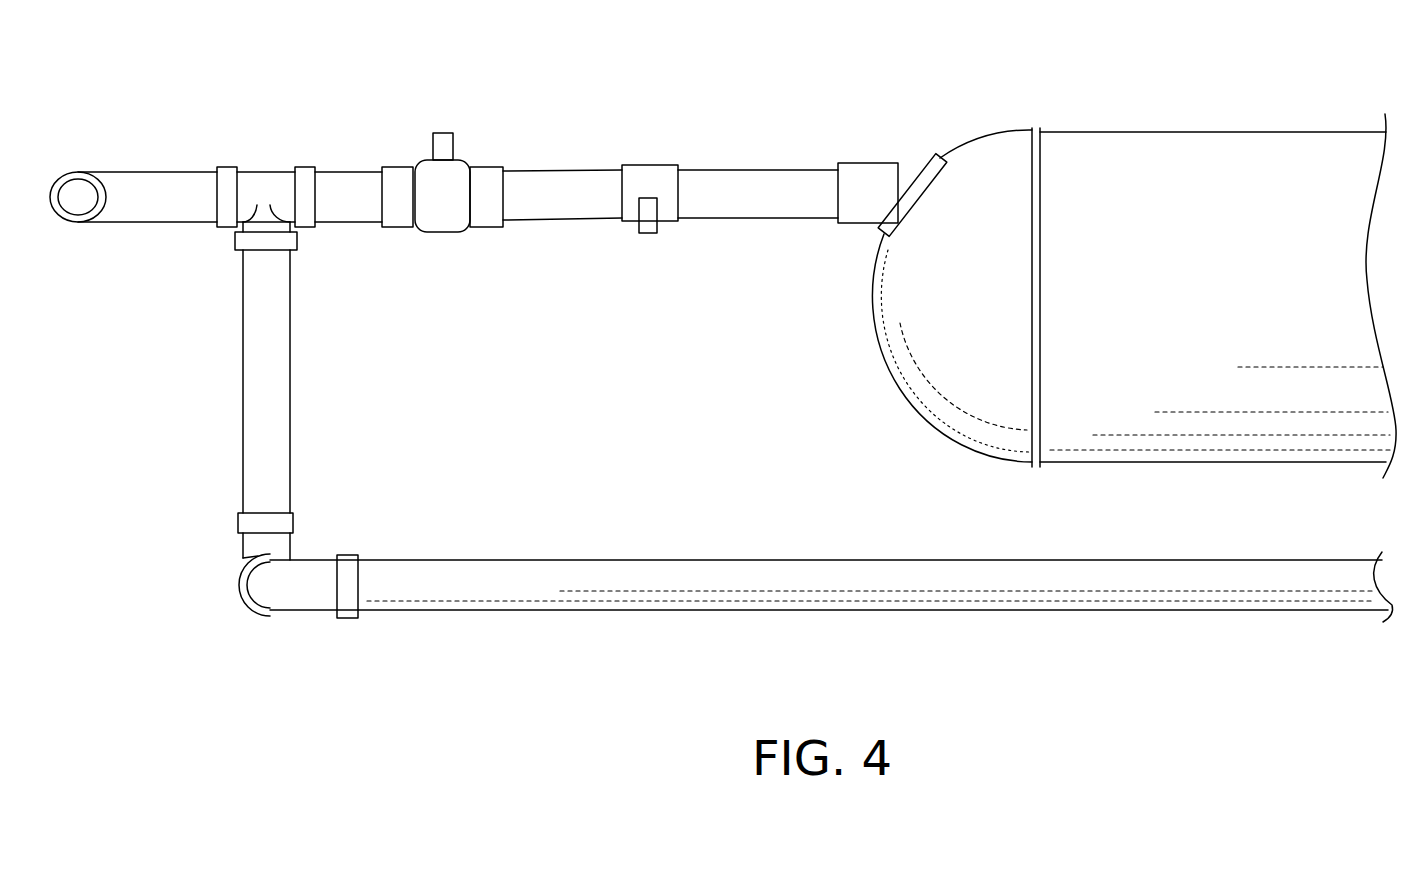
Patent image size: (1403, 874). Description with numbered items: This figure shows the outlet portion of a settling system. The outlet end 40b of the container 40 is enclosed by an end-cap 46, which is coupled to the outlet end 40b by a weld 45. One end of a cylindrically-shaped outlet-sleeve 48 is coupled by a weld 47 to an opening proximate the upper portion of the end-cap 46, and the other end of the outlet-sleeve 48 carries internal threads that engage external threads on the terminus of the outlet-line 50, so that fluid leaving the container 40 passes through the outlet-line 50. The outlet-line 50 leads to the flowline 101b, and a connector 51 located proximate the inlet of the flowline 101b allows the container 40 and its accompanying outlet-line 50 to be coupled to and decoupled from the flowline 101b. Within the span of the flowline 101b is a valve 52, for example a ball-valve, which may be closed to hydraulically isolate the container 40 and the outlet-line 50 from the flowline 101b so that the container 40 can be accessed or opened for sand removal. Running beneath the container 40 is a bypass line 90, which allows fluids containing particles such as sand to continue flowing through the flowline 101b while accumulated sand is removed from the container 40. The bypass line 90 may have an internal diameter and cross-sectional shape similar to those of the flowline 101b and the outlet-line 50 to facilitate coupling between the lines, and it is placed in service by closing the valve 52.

The flowline 101b is at (158, 172).
The outlet-line 50 is at (762, 170).
The valve 52 is at (448, 232).
The connector 51 is at (650, 233).
The outlet-sleeve 48 is at (853, 163).
The weld 47 is at (910, 184).
The end-cap 46 is at (992, 135).
The weld 45 is at (1036, 128).
The outlet end 40b is at (1100, 132).
The container 40 is at (1270, 132).
The bypass line 90 is at (468, 612).